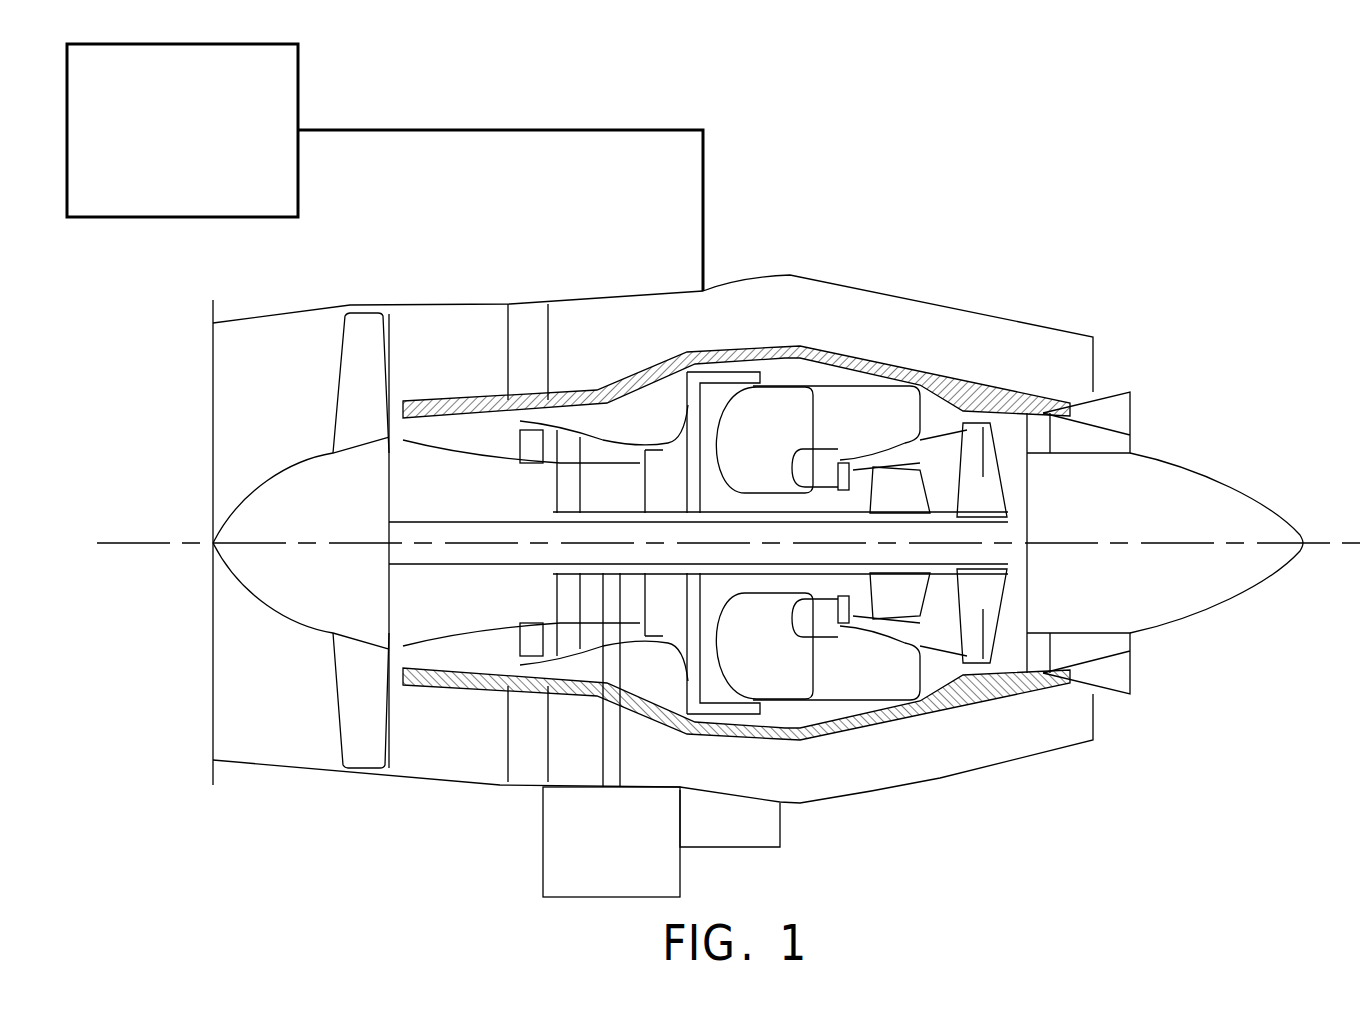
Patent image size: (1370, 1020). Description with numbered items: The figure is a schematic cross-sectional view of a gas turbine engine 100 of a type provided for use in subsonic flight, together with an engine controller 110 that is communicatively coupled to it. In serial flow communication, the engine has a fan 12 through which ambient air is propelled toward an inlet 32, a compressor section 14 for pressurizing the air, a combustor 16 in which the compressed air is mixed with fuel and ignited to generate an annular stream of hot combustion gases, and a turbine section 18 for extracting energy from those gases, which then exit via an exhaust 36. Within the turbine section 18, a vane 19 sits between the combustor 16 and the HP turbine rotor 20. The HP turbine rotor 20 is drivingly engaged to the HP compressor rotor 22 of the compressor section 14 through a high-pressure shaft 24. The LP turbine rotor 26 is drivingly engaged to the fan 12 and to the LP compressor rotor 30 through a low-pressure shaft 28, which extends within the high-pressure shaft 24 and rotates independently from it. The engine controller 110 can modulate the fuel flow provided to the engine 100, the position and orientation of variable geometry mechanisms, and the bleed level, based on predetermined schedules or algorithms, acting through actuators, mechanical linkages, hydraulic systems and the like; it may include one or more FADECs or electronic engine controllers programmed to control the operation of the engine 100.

The gas turbine engine 100 is at (983, 140).
The engine controller 110 is at (152, 192).
The fan 12 is at (357, 692).
The compressor section 14 is at (603, 447).
The combustor 16 is at (810, 407).
The turbine section 18 is at (927, 650).
The vane 19 is at (843, 461).
The HP turbine rotor 20 is at (915, 478).
The HP compressor rotor 22 is at (673, 470).
The high-pressure shaft 24 is at (810, 470).
The LP turbine rotor 26 is at (913, 463).
The low-pressure shaft 28 is at (440, 567).
The LP compressor rotor 30 is at (567, 457).
The inlet 32 is at (297, 417).
The exhaust 36 is at (1127, 436).